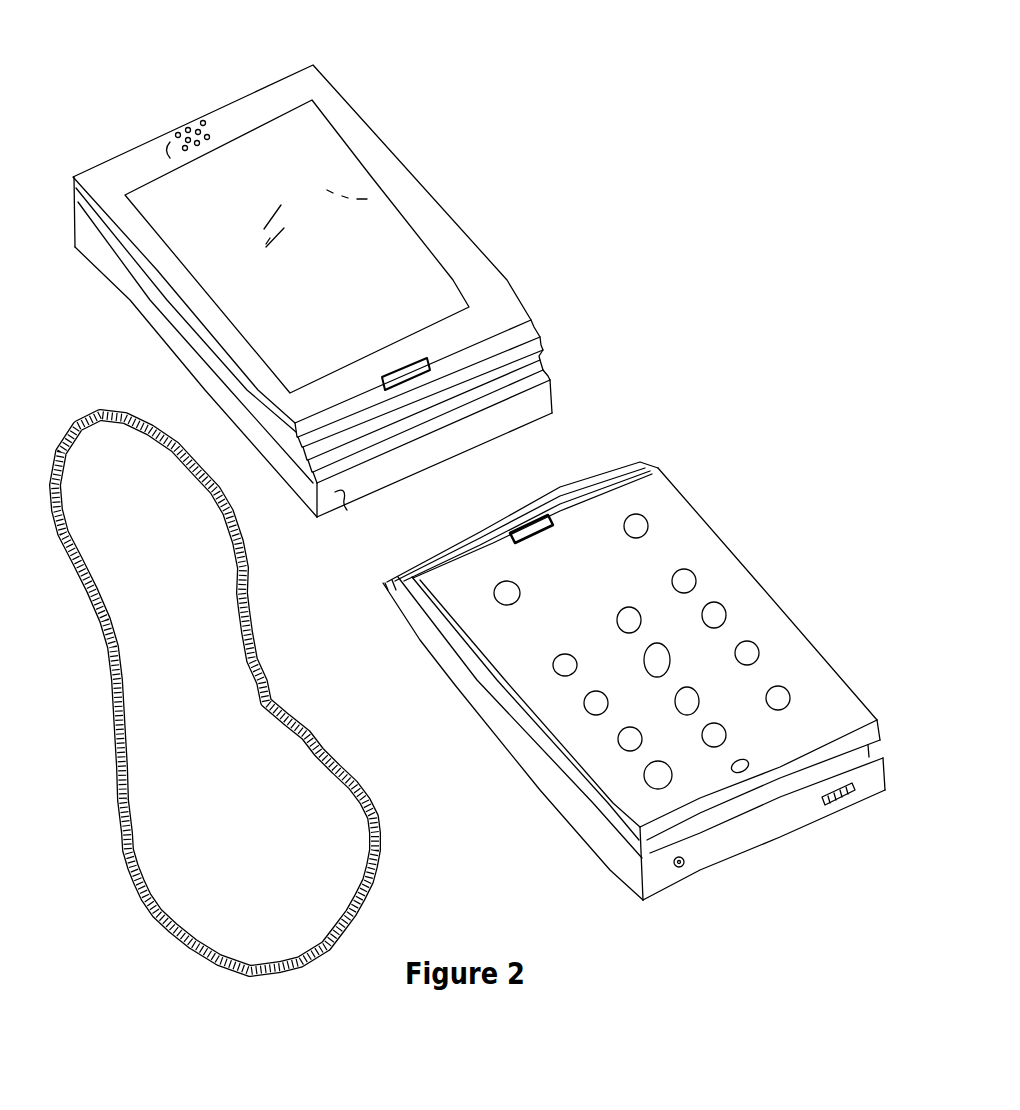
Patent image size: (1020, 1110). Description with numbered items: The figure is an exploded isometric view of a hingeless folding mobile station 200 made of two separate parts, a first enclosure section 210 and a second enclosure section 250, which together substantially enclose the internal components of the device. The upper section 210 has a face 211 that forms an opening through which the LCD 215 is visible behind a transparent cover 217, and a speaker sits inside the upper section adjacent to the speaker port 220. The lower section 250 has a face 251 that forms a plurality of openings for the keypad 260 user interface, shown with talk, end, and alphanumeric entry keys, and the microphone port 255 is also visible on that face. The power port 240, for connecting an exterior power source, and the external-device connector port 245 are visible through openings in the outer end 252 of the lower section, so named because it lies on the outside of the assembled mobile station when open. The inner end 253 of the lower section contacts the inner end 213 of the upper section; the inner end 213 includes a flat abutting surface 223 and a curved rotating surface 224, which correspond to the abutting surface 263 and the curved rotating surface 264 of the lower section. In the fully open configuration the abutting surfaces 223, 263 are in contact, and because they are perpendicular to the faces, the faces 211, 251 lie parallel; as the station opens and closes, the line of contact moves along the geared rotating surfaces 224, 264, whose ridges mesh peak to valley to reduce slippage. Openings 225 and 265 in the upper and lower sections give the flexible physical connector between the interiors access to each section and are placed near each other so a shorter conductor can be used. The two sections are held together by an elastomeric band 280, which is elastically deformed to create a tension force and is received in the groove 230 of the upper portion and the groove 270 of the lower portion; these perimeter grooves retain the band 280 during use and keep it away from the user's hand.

The mobile station 200 is at (722, 252).
The first enclosure section 210 is at (373, 137).
The face 211 is at (293, 92).
The inner end 213 is at (534, 434).
The LCD 215 is at (370, 193).
The transparent cover 217 is at (383, 230).
The speaker port 220 is at (224, 128).
The abutting surface 223 is at (320, 513).
The rotating surface 224 is at (524, 340).
The opening 225 is at (482, 318).
The groove 230 is at (551, 371).
The power port 240 is at (686, 865).
The external-device connector port 245 is at (859, 789).
The second enclosure section 250 is at (733, 549).
The face 251 is at (689, 527).
The outer end 252 is at (657, 883).
The inner end 253 is at (452, 546).
The microphone port 255 is at (751, 757).
The keypad 260 is at (733, 632).
The abutting surface 263 is at (382, 586).
The rotating surface 264 is at (641, 466).
The opening 265 is at (552, 516).
The groove 270 is at (594, 800).
The elastomeric band 280 is at (385, 860).